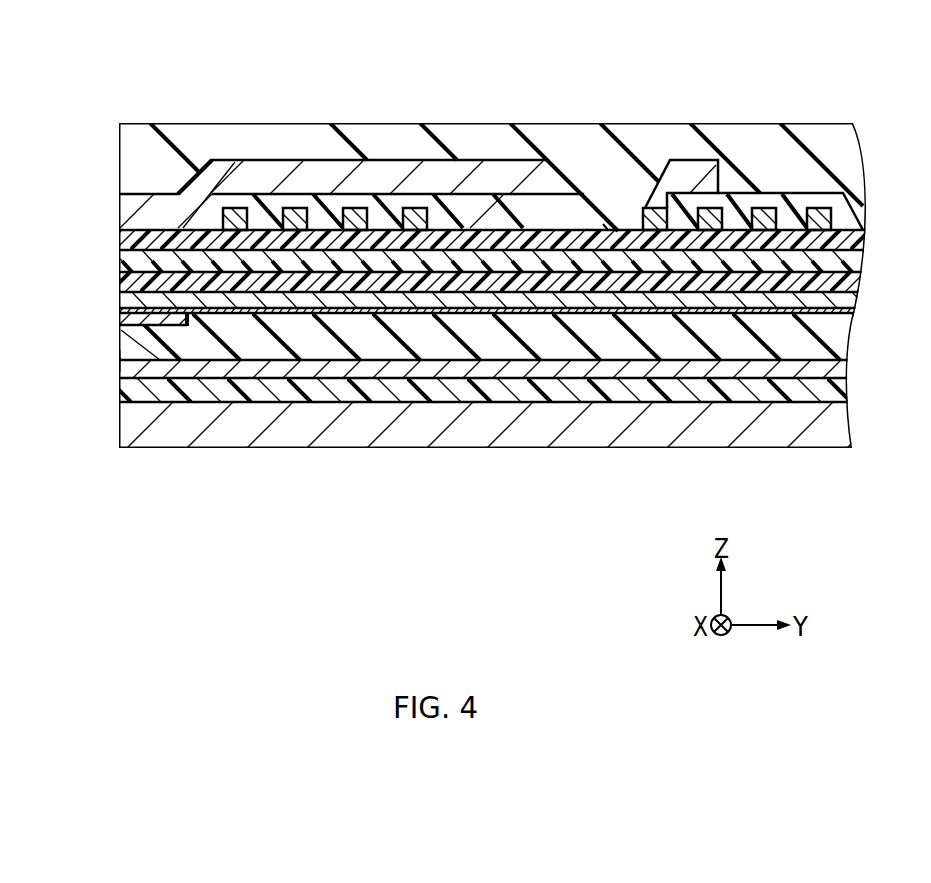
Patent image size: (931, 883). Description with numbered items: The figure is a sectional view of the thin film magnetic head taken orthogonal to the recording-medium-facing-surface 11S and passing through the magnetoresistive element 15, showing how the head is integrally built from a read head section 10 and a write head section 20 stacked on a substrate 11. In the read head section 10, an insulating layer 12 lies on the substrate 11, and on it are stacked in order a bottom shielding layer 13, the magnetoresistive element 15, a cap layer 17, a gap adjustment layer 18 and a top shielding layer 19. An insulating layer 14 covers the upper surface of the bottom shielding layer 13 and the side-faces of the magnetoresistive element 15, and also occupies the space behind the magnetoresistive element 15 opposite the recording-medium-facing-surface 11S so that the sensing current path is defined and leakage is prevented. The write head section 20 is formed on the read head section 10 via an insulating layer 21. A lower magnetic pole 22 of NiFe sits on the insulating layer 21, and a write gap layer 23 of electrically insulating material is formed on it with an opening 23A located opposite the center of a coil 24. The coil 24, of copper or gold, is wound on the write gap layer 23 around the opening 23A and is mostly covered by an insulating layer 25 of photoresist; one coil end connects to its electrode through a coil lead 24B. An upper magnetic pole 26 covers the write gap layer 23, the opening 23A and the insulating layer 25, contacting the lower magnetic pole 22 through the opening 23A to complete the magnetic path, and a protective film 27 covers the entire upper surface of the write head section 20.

The read head section 10 is at (449, 286).
The substrate 11 is at (687, 440).
The recording-medium-facing-surface 11S is at (119, 361).
The insulating layer 12 is at (752, 395).
The bottom shielding layer 13 is at (808, 365).
The insulating layer 14 is at (490, 340).
The magnetoresistive element 15 is at (143, 345).
The cap layer 17 is at (190, 322).
The gap adjustment layer 18 is at (557, 313).
The top shielding layer 19 is at (608, 295).
The write head section 20 is at (491, 123).
The insulating layer 21 is at (233, 277).
The lower magnetic pole 22 is at (345, 262).
The write gap layer 23 is at (450, 238).
The opening 23A is at (596, 147).
The coil 24 is at (292, 210).
The coil lead 24B is at (697, 180).
The insulating layer 25 is at (498, 218).
The upper magnetic pole 26 is at (394, 168).
The protective film 27 is at (546, 133).